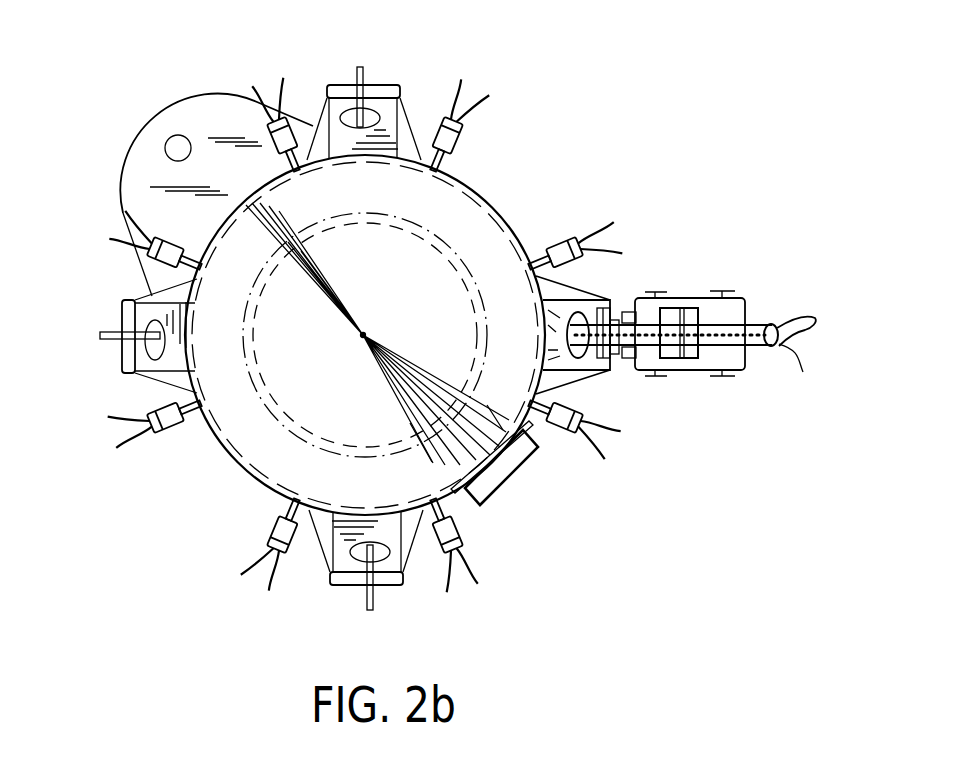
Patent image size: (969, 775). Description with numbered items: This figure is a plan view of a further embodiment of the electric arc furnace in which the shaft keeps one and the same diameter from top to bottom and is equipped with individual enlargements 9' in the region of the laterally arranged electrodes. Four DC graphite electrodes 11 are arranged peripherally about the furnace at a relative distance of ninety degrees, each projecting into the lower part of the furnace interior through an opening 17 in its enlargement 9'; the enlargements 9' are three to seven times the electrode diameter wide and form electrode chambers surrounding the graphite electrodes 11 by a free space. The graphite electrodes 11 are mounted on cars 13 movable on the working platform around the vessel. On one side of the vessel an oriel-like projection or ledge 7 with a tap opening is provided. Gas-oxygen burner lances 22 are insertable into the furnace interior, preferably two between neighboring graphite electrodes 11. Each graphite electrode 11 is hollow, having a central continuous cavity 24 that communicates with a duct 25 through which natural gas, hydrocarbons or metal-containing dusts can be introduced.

The oriel-like projection or ledge 7 is at (205, 112).
The enlargements 9' is at (357, 350).
The graphite electrodes 11 is at (357, 70).
The cars 13 is at (703, 370).
The openings 17 is at (583, 316).
The gas-oxygen burner lances 22 is at (285, 118).
The central continuous cavity or through opening 24 is at (808, 371).
The duct 25 is at (810, 318).